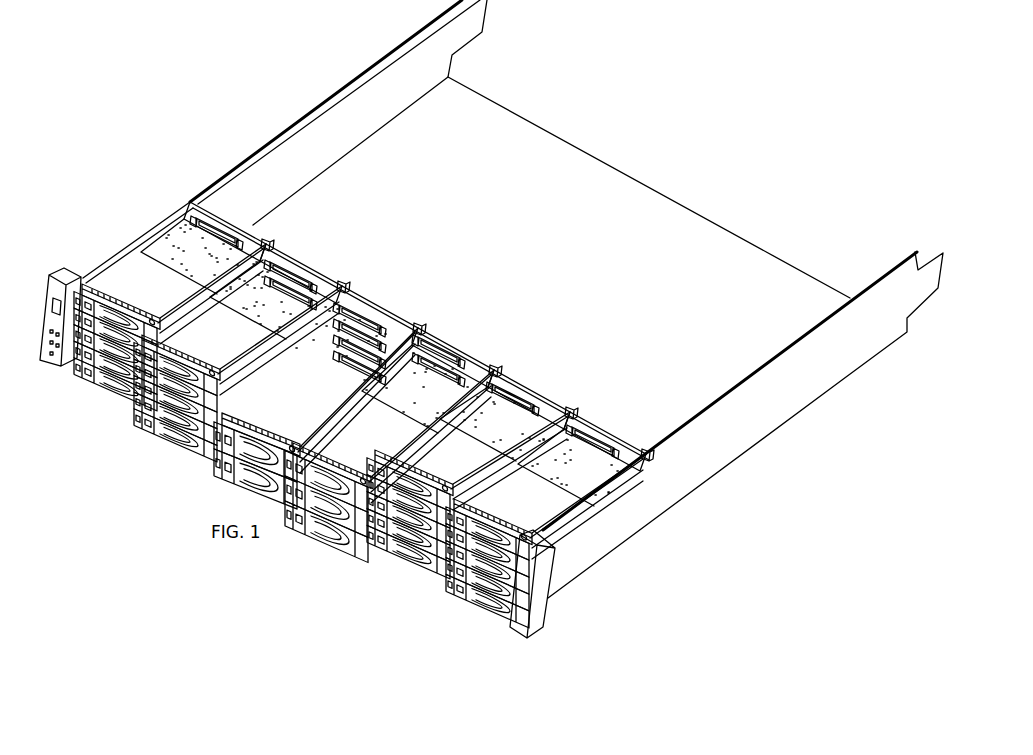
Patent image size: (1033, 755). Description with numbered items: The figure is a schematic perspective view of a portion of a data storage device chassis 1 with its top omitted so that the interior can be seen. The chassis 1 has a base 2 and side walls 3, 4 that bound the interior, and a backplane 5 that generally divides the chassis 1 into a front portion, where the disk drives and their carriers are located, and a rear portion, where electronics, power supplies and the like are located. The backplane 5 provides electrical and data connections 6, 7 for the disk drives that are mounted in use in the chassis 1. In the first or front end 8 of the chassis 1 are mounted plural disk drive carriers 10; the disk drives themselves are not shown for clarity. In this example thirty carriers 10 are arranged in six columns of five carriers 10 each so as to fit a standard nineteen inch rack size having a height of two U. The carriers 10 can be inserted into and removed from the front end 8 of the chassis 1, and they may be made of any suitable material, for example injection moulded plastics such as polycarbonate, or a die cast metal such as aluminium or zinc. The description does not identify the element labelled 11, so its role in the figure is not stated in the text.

The data storage device chassis 1 is at (566, 319).
The base 2 is at (655, 187).
The side wall 3 is at (715, 438).
The side wall 4 is at (268, 165).
The backplane 5 is at (304, 259).
The electrical and data connection 6 is at (437, 350).
The electrical and data connection 7 is at (357, 312).
The front end 8 is at (210, 478).
The disk drive carrier 10 is at (563, 438).
The cage mounting bracket 11 is at (492, 368).